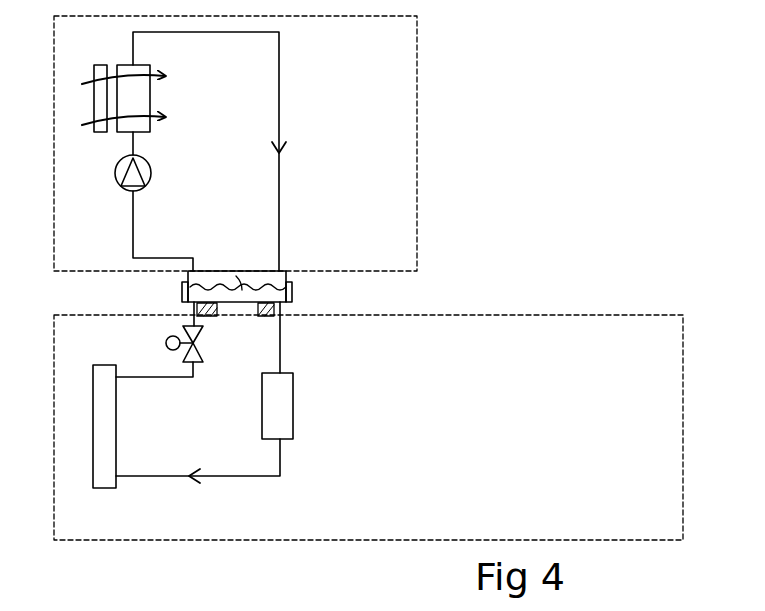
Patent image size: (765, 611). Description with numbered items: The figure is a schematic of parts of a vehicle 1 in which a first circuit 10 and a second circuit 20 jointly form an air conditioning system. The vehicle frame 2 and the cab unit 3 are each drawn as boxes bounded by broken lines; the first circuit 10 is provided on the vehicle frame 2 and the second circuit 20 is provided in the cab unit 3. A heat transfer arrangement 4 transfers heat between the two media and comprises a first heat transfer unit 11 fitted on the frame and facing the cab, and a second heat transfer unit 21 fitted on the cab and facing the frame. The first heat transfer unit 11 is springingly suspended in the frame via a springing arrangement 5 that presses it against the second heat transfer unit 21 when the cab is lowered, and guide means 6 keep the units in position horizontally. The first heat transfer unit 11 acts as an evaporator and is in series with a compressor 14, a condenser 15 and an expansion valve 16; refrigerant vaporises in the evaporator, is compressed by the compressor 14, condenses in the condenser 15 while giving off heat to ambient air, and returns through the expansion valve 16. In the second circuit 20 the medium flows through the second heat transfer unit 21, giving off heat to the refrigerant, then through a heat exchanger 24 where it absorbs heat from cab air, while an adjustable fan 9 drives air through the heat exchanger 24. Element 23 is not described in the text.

The vehicle 1 is at (526, 173).
The vehicle frame 2 is at (490, 315).
The cab unit 3 is at (413, 67).
The heat transfer arrangement 4 is at (287, 267).
The springing arrangement 5 is at (262, 314).
The guide means 6 is at (182, 293).
The adjustable fan 9 is at (94, 100).
The first circuit 10 is at (313, 357).
The first heat transfer unit 11 is at (243, 290).
The compressor 14 is at (293, 411).
The condenser 15 is at (116, 438).
The expansion valve 16 is at (197, 358).
The second circuit 20 is at (307, 122).
The second heat transfer unit 21 is at (210, 275).
The pump 23 is at (150, 166).
The heat exchanger 24 is at (150, 99).